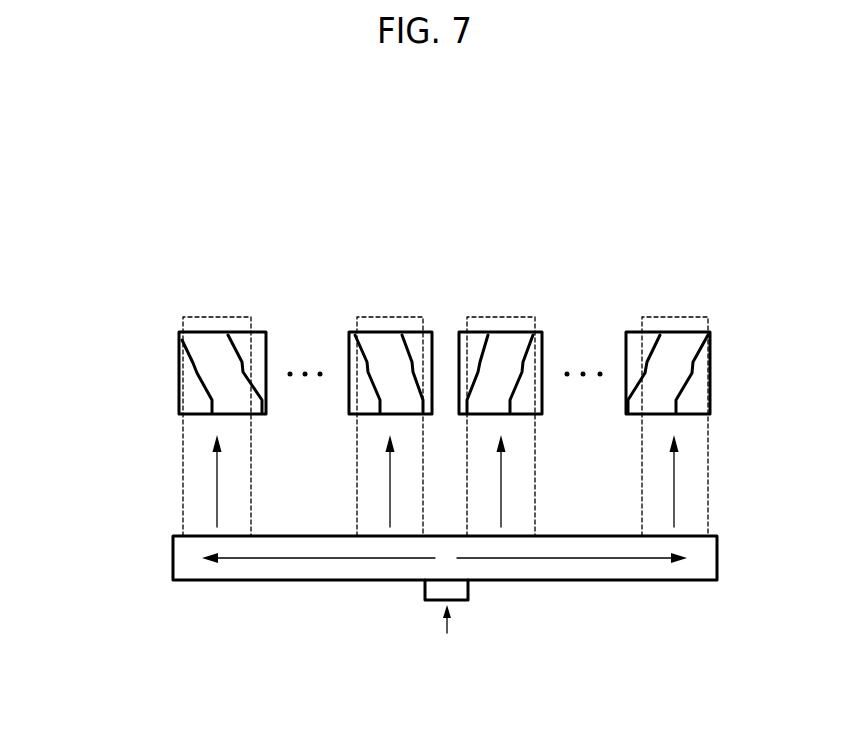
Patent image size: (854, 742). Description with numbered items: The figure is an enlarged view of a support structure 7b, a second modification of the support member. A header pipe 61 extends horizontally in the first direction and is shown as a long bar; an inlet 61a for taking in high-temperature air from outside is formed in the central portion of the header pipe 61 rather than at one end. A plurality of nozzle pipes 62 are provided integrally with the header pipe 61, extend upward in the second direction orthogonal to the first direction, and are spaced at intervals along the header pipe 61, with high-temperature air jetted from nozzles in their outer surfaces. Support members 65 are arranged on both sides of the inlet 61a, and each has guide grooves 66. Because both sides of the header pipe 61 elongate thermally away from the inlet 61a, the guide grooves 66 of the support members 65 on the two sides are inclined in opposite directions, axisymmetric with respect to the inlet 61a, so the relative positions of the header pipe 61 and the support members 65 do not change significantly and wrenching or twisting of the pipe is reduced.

The support structure 7b is at (98, 212).
The header pipe 61 is at (190, 572).
The inlet 61a is at (427, 590).
The nozzle pipe 62 is at (183, 475).
The support member 65 is at (260, 340).
The guide groove 66 is at (212, 345).